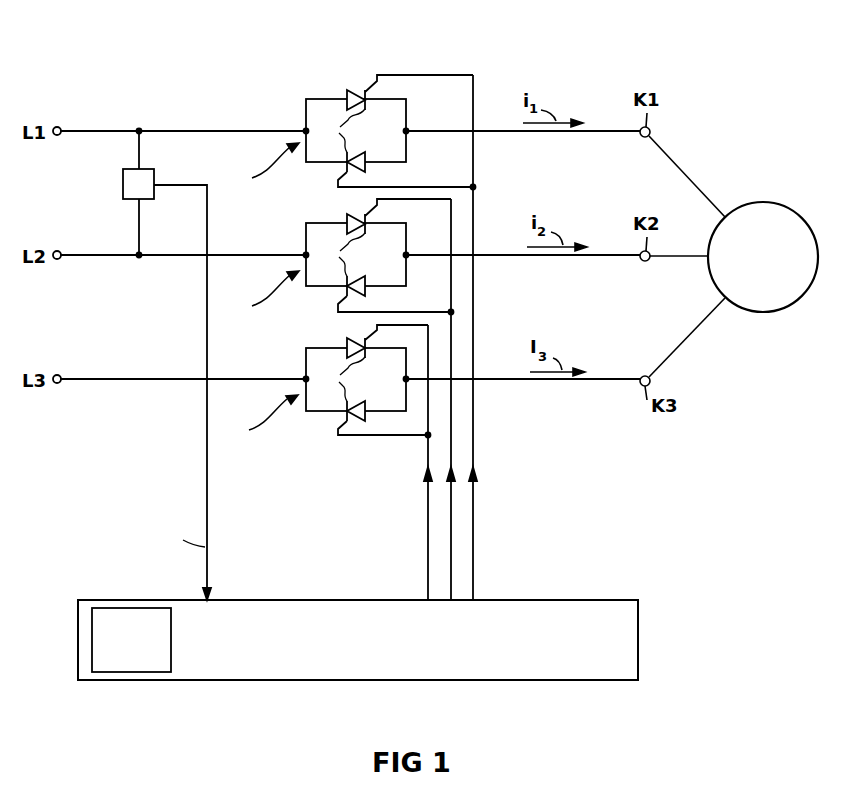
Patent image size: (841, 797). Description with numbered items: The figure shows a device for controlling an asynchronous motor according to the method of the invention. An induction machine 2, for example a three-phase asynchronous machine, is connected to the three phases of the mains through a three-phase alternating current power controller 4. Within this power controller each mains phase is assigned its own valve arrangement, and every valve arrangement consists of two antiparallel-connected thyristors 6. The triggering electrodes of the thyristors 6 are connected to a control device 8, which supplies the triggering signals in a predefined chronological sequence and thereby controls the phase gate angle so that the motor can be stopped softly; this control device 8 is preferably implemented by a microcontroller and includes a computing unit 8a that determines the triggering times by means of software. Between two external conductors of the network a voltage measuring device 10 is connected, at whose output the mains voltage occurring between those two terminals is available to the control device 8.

The induction machine 2 is at (764, 202).
The three-phase alternating current power controller 4 is at (104, 79).
The thyristors 6 is at (391, 337).
The control device 8 is at (351, 593).
The computing unit 8a is at (113, 620).
The voltage measuring device 10 is at (130, 200).